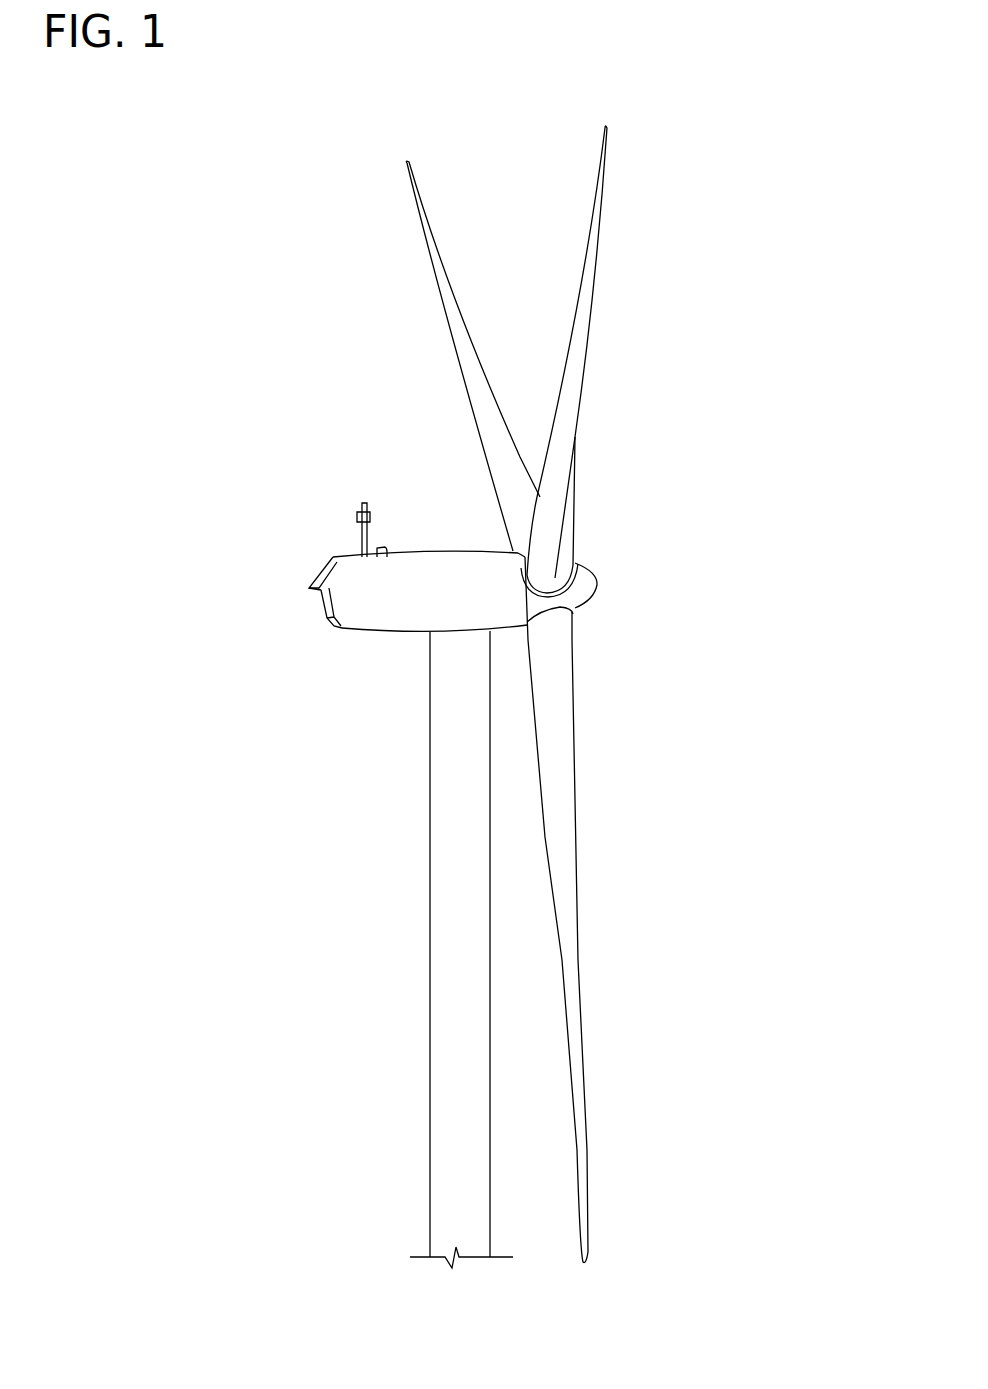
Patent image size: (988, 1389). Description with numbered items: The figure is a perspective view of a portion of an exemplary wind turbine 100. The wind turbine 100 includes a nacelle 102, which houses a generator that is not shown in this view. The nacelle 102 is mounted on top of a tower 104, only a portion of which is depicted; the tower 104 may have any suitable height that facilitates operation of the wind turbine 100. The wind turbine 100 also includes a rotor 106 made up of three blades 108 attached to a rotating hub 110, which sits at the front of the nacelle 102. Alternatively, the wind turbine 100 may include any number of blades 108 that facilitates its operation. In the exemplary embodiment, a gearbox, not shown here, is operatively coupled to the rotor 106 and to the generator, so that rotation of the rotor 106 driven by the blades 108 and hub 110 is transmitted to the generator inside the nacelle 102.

The wind turbine 100 is at (298, 210).
The nacelle 102 is at (361, 631).
The tower 104 is at (430, 895).
The rotor 106 is at (646, 338).
The blades 108 is at (443, 245).
The rotating hub 110 is at (590, 598).